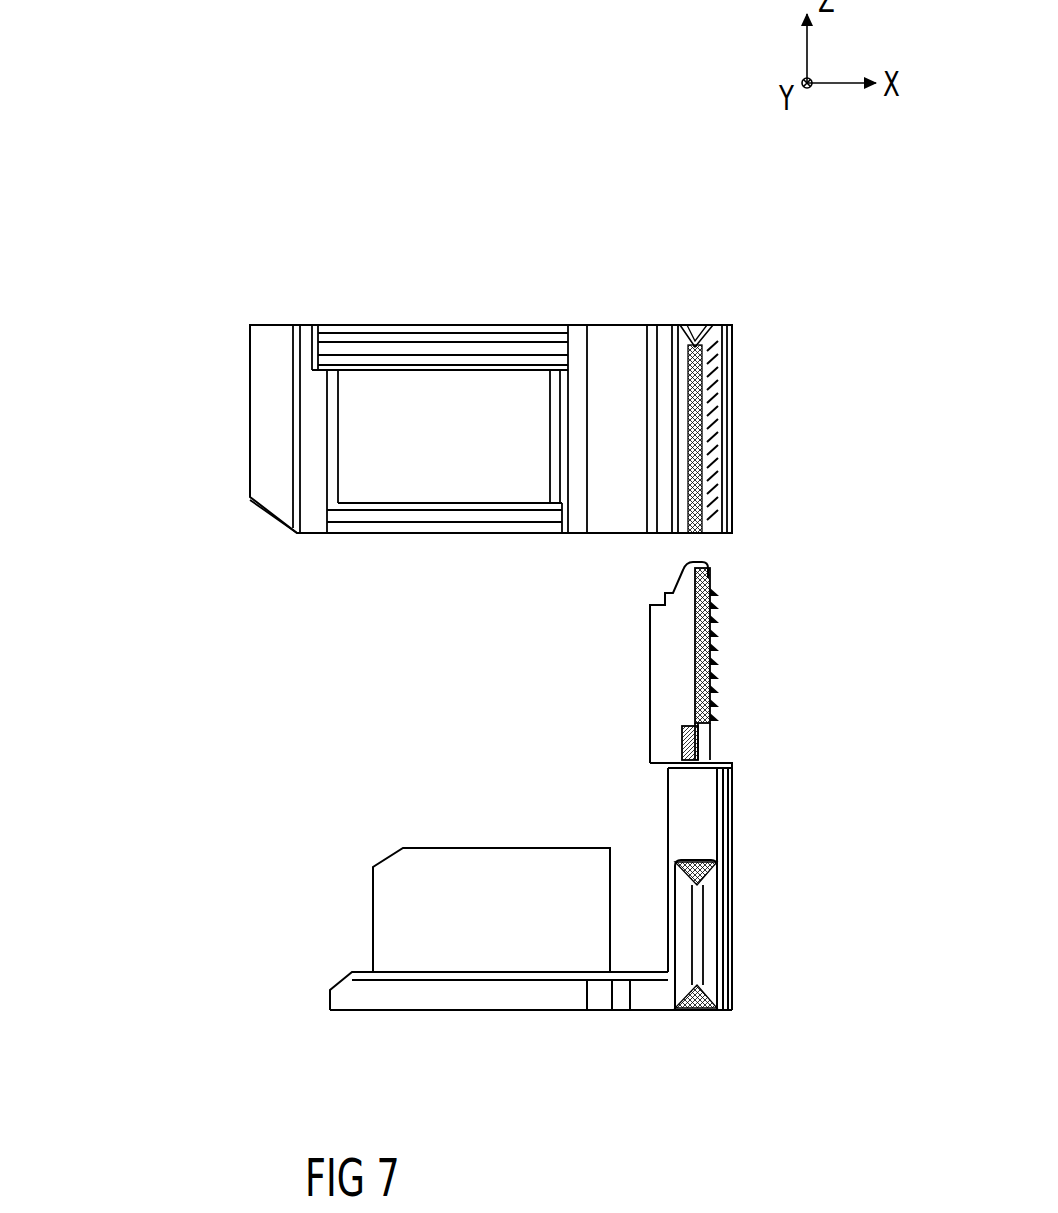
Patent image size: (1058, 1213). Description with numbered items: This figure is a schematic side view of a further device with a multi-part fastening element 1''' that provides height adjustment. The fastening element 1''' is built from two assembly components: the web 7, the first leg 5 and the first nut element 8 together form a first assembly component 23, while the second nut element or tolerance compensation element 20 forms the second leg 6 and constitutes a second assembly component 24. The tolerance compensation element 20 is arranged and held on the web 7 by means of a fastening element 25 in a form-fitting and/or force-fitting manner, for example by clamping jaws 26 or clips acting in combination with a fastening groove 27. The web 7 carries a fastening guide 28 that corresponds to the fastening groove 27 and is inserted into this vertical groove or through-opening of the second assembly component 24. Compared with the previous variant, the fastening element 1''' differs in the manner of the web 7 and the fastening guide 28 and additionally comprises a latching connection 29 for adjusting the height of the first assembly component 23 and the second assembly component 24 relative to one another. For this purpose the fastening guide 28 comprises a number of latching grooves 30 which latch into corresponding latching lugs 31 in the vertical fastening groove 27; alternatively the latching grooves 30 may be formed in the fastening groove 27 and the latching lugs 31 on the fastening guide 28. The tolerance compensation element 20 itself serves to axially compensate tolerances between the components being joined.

The fastening element 1''' is at (468, 636).
The first leg 5 is at (487, 990).
The second leg 6 is at (783, 365).
The web 7 is at (768, 832).
The first nut element 8 is at (390, 910).
The tolerance compensation element 20 is at (425, 490).
The first assembly component 23 is at (218, 938).
The second assembly component 24 is at (158, 418).
The fastening element 25 is at (507, 287).
The clamping jaws 26 is at (265, 437).
The fastening groove 27 is at (695, 320).
The fastening guide 28 is at (665, 675).
The latching connection 29 is at (745, 562).
The latching grooves 30 is at (715, 690).
The latching lugs 31 is at (718, 498).